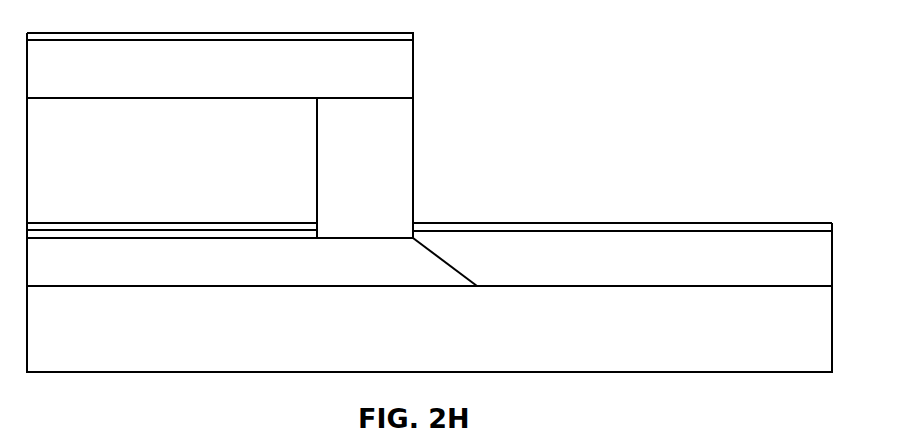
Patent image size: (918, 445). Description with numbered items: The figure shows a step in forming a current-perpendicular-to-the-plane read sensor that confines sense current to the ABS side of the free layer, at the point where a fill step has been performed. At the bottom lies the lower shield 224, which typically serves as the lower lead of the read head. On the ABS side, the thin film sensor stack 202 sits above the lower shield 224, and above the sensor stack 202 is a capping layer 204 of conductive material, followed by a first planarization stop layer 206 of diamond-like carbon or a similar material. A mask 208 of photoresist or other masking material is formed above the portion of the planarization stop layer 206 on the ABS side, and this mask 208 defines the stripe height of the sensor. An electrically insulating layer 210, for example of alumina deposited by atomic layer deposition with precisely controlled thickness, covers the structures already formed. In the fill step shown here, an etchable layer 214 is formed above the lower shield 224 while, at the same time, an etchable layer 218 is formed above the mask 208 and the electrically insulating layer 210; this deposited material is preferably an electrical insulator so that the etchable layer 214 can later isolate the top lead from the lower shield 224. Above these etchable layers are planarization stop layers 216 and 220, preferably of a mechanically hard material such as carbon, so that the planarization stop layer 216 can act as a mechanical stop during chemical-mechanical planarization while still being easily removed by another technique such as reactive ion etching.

The thin film sensor stack 202 is at (243, 273).
The capping layer 204 is at (305, 234).
The first planarization stop layer 206 is at (302, 227).
The mask 208 is at (191, 176).
The electrically insulating layer 210 is at (402, 127).
The etchable layer 214 is at (659, 271).
The planarization stop layer 216 is at (707, 228).
The etchable layer 218 is at (240, 78).
The planarization stop layer 220 is at (398, 35).
The lower shield 224 is at (448, 339).